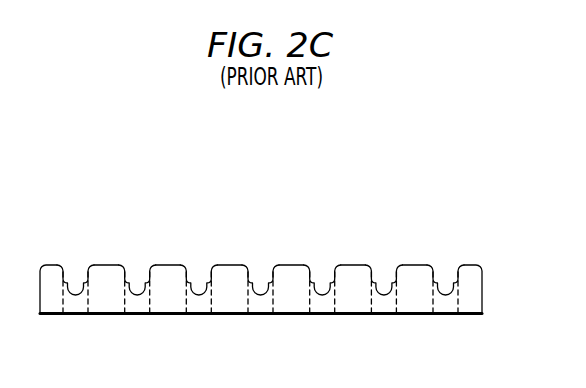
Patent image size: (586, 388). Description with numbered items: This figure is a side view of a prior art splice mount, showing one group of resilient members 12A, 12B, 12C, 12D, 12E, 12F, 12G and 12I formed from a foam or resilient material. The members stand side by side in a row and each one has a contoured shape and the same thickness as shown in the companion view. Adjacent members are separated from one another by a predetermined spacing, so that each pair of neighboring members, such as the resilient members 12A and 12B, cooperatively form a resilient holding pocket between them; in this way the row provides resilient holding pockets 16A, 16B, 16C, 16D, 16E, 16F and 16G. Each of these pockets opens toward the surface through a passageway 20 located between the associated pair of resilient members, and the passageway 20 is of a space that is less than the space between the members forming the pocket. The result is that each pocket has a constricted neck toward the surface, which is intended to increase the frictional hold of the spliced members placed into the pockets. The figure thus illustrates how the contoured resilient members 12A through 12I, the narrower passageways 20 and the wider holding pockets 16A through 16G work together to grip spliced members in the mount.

The resilient member 12A is at (48, 265).
The resilient member 12B is at (109, 265).
The resilient member 12C is at (171, 265).
The resilient member 12D is at (233, 265).
The resilient member 12E is at (294, 265).
The resilient member 12F is at (356, 265).
The resilient member 12G is at (418, 265).
The resilient member 12I is at (479, 265).
The resilient holding pocket 16A is at (72, 276).
The resilient holding pocket 16B is at (134, 276).
The resilient holding pocket 16C is at (196, 276).
The resilient holding pocket 16D is at (258, 276).
The resilient holding pocket 16E is at (319, 276).
The resilient holding pocket 16F is at (381, 276).
The resilient holding pocket 16G is at (442, 276).
The passageway 20 is at (80, 279).